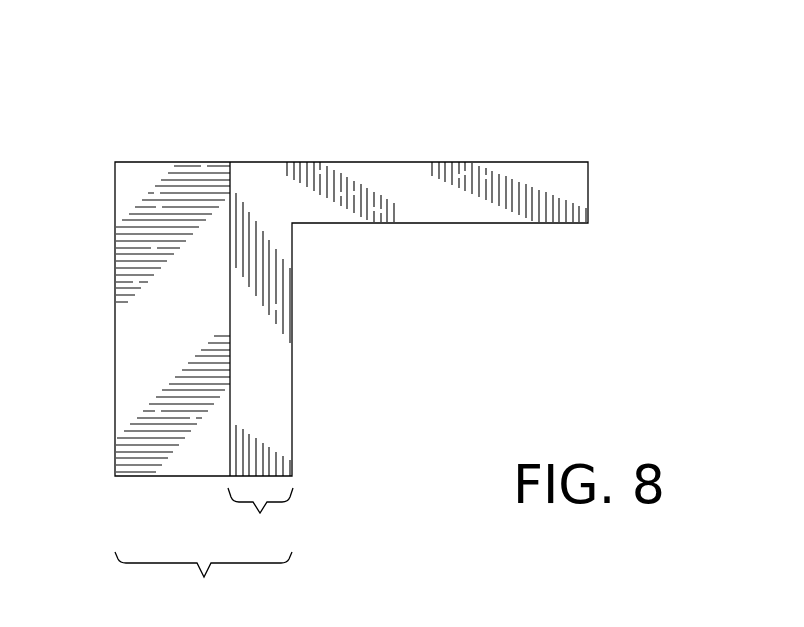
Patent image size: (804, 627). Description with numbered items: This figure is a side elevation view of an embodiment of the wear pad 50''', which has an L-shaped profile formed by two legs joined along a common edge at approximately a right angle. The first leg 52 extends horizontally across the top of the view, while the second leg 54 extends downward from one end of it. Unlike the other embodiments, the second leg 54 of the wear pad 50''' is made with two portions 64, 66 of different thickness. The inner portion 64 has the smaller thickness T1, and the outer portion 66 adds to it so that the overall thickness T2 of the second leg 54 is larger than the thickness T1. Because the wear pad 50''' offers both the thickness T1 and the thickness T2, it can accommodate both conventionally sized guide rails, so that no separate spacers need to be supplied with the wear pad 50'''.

The wear pad 50''' is at (372, 255).
The first leg 52 is at (373, 178).
The second leg 54 is at (130, 332).
The portion of second leg 64 is at (260, 426).
The portion of second leg 66 is at (133, 422).
The thickness T1 is at (260, 516).
The thickness T2 is at (203, 581).